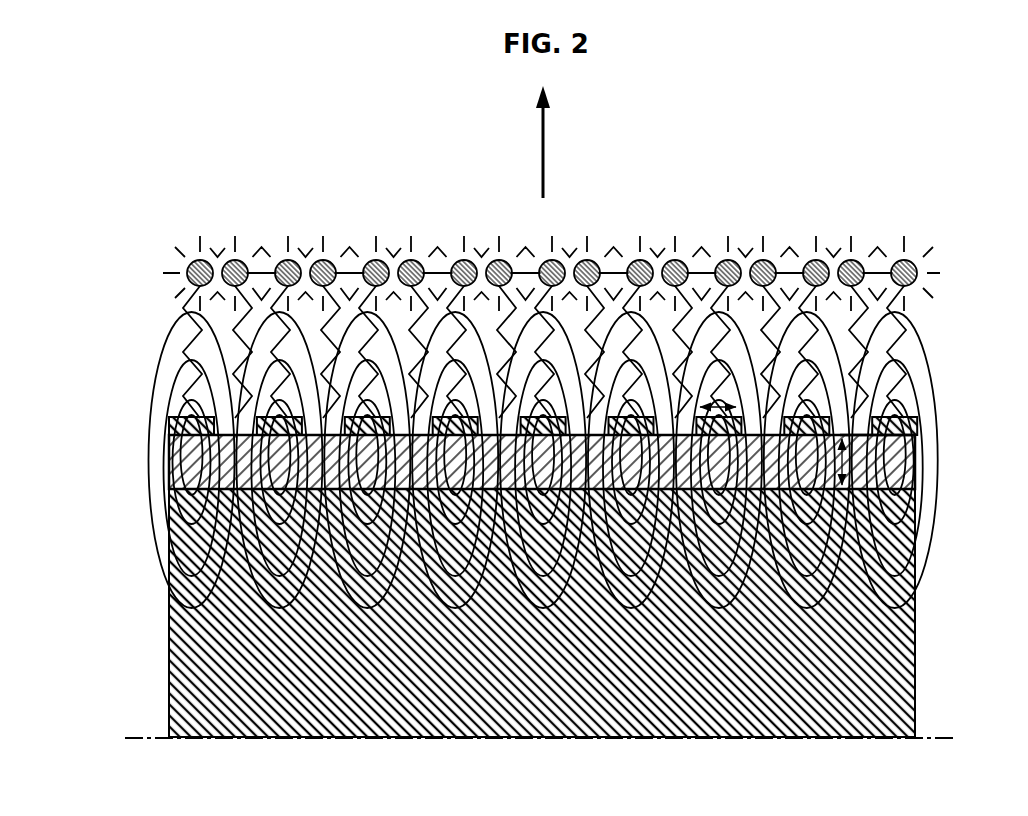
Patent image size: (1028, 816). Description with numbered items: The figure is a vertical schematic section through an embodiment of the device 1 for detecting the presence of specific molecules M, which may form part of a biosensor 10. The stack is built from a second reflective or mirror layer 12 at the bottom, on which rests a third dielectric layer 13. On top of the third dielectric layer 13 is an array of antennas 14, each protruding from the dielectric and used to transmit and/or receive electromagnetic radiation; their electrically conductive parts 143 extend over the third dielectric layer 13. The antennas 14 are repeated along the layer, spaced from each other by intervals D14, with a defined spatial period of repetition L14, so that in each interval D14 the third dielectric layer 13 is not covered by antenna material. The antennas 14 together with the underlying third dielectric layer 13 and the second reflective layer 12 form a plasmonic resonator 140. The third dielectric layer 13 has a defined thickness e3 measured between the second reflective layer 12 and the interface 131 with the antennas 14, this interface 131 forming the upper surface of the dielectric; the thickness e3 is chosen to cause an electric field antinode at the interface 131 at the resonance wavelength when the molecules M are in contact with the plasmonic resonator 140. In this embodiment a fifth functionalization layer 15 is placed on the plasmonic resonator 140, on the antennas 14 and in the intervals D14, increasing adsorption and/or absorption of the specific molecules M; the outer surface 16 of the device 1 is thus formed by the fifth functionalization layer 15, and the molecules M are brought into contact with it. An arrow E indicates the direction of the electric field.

The device 1 is at (292, 162).
The biosensor 10 is at (691, 782).
The second reflective layer 12 is at (200, 662).
The third dielectric layer 13 is at (230, 465).
The interface 131 is at (857, 443).
The antenna 14 is at (190, 423).
The plasmonic resonator 140 is at (160, 426).
The electrically conductive part 143 is at (797, 420).
The fifth functionalization layer 15 is at (193, 313).
The outer surface 16 is at (99, 338).
The specific molecules M is at (648, 268).
The electric field direction E is at (543, 150).
The spatial period of repetition L14 is at (718, 402).
The interval D14 is at (848, 413).
The thickness e3 is at (843, 460).